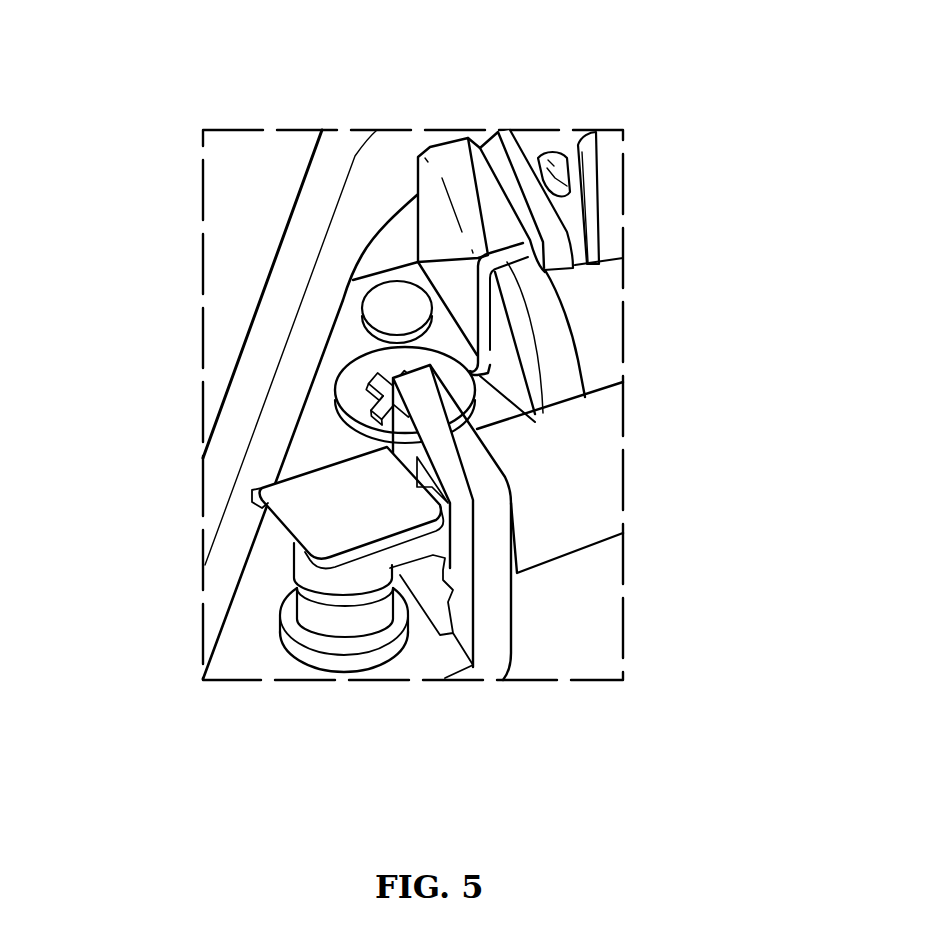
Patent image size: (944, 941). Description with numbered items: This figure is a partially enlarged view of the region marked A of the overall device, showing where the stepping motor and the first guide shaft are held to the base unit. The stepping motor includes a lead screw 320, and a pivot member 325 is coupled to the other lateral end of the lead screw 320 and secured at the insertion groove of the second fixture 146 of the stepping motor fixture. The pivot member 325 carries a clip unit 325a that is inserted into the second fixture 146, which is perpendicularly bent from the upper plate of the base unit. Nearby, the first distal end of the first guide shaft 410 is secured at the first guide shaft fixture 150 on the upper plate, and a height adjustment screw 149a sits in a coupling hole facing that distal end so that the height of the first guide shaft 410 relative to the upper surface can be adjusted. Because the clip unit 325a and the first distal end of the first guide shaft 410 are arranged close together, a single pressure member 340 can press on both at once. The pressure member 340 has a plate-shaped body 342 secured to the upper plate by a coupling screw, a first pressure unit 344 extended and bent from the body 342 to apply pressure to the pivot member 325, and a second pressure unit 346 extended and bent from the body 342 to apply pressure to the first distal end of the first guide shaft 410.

The enlarged region A is at (203, 150).
The pressure member 340 is at (338, 349).
The body 342 is at (312, 440).
The first pressure unit 344 is at (432, 228).
The second pressure unit 346 is at (310, 508).
The pivot member 325 is at (508, 172).
The clip unit 325a is at (513, 260).
The lead screw 320 is at (604, 158).
The second fixture 146 is at (555, 355).
The first guide shaft 410 is at (588, 513).
The first guide shaft fixture 150 is at (497, 634).
The height adjustment screw 149a is at (357, 627).